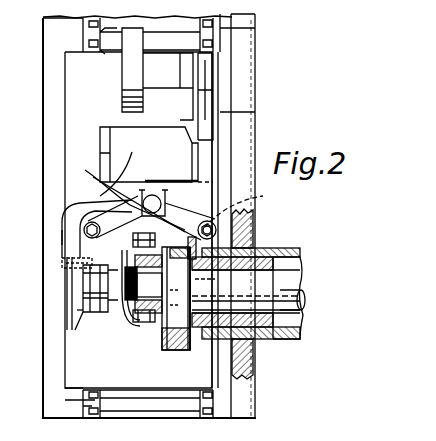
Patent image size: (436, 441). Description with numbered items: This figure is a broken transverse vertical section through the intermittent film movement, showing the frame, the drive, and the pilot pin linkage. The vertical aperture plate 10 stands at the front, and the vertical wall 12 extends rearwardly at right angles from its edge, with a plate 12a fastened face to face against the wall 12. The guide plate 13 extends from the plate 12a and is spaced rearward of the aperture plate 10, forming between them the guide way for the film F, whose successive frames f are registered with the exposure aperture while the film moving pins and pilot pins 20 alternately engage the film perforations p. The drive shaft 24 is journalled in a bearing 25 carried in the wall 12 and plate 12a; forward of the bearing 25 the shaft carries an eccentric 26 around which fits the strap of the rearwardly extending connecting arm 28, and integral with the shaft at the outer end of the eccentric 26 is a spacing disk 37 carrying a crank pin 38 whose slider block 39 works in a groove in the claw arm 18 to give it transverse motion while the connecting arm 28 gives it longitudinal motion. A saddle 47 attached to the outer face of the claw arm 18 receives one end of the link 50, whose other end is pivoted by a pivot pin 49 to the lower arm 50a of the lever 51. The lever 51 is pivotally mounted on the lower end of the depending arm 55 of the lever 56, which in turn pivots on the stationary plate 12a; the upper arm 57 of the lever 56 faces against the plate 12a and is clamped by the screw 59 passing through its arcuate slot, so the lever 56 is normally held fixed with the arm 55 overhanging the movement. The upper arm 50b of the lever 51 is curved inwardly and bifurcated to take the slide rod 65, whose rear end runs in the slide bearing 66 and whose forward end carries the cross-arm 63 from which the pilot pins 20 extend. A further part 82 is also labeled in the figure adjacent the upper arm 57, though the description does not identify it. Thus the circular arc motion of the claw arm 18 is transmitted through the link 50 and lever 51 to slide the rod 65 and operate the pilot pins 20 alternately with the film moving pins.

The aperture plate 10 is at (52, 43).
The vertical wall 12 is at (247, 86).
The plate 12a is at (220, 113).
The guide plate 13 is at (82, 80).
The film frame f is at (232, 28).
The film F is at (87, 405).
The film perforation p is at (83, 398).
The clamping screw 59 is at (160, 68).
The block 82 is at (203, 93).
The upper arm 57 is at (200, 110).
The depending arm 55 is at (70, 230).
The lever 56 is at (67, 218).
The pilot pins 20 is at (252, 199).
The slide rod 65 is at (167, 214).
The slide bearing 66 is at (102, 185).
The cross-arm 63 is at (117, 213).
The upper arm 50b is at (182, 167).
The link 50 is at (88, 287).
The lever 51 is at (88, 298).
The pivot pin 49 is at (78, 316).
The lower arm 50a is at (85, 312).
The saddle 47 is at (113, 312).
The claw arm 18 is at (133, 303).
The eccentric 26 is at (173, 322).
The spacing flange or disk 37 is at (167, 320).
The connecting arm 28 is at (178, 357).
The drive shaft 24 is at (262, 337).
The slider block 39 is at (190, 297).
The crank pin 38 is at (183, 280).
The bearing 25 is at (296, 317).